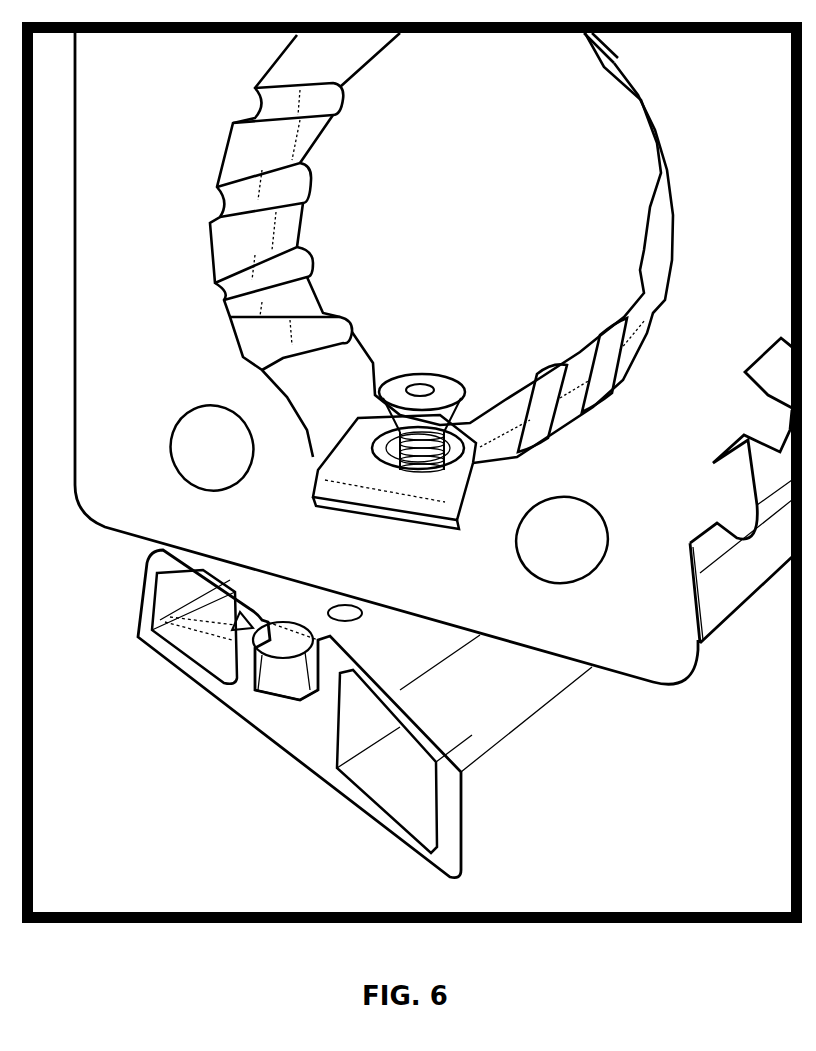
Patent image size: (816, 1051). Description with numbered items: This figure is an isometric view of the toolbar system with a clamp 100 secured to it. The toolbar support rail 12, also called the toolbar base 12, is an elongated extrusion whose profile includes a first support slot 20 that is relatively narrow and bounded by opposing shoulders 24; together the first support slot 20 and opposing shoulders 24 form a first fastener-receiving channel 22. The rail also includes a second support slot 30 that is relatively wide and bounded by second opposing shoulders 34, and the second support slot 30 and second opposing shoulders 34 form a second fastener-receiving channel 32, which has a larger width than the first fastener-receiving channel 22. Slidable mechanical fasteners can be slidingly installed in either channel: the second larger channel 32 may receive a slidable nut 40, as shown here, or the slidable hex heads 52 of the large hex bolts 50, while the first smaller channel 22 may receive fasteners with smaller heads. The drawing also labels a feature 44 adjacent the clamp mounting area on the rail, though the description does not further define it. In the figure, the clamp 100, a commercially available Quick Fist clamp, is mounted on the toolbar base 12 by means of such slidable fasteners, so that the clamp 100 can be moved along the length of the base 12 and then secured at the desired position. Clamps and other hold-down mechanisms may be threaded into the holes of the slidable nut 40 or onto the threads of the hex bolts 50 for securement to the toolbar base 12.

The clamp 100 is at (160, 328).
The toolbar support rail 12 is at (522, 784).
The first support slot 20 is at (282, 710).
The first fastener-receiving channel 22 is at (270, 707).
The opposing shoulders 24 is at (300, 712).
The second support slot 30 is at (245, 700).
The second fastener-receiving channel 32 is at (233, 632).
The second opposing shoulders 34 is at (165, 622).
The slidable nut 40 is at (297, 607).
The lug 44 is at (350, 600).
The large hex bolt 50 is at (405, 380).
The large hex head 52 is at (462, 440).